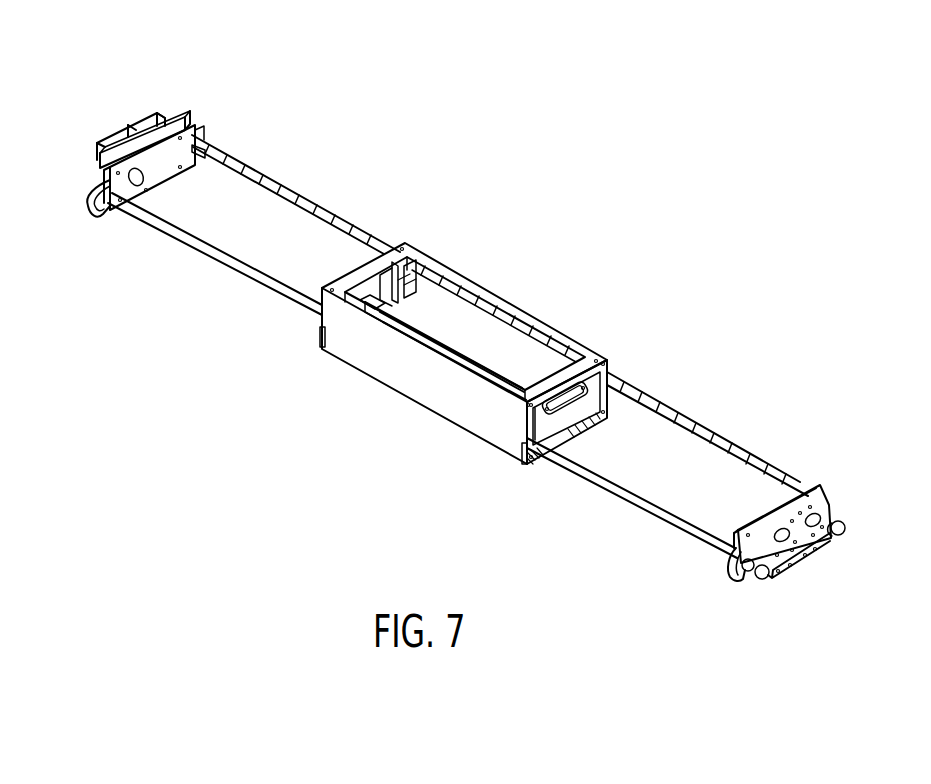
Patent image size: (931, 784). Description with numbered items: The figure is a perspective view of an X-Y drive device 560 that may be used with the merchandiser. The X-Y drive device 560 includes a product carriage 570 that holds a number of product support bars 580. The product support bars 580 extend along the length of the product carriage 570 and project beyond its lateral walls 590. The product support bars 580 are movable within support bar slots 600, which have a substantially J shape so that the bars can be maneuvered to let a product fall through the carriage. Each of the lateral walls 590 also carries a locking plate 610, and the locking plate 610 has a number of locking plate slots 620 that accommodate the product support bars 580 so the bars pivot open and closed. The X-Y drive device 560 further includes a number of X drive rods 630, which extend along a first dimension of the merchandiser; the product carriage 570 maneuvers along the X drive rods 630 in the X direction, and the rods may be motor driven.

The X-Y drive device 560 is at (106, 73).
The product carriage 570 is at (395, 391).
The product support bars 580 is at (437, 320).
The lateral walls 590 is at (353, 270).
The support bar slots 600 is at (390, 298).
The locking plate 610 is at (593, 426).
The locking plate slots 620 is at (614, 379).
The X drive rods 630 is at (248, 174).